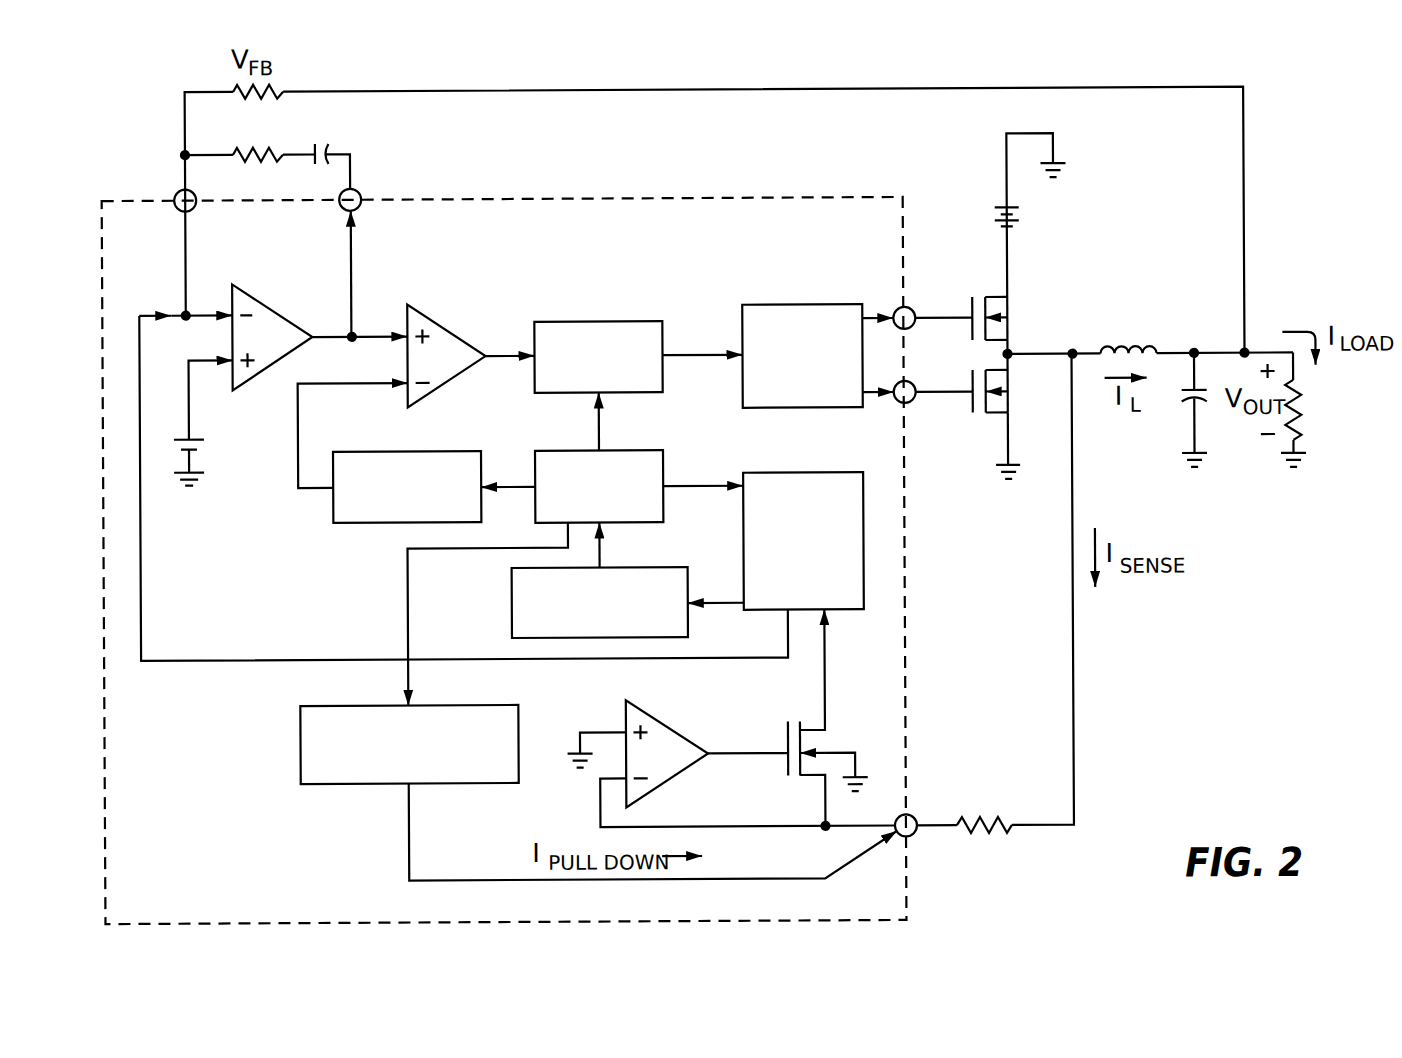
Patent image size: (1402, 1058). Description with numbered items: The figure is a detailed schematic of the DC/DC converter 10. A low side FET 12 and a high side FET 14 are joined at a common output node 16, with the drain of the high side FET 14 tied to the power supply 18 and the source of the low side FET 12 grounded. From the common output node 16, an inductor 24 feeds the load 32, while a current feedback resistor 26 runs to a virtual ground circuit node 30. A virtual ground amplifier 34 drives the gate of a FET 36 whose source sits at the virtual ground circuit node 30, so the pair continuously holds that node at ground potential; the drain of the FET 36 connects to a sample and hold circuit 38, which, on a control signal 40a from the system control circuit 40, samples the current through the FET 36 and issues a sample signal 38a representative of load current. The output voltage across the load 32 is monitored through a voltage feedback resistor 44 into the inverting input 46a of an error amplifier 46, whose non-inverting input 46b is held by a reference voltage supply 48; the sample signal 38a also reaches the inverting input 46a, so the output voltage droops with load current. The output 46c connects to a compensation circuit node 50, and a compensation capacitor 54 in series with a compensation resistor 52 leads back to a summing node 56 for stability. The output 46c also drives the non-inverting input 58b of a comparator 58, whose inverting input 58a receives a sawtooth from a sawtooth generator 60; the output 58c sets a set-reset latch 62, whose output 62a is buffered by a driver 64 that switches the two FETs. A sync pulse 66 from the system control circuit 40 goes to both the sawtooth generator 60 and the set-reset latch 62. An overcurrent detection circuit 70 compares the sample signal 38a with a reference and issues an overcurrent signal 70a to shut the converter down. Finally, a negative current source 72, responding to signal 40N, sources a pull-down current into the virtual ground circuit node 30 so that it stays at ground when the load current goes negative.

The DC/DC converter 10 is at (1296, 166).
The low side FET 12 is at (998, 415).
The high side FET 14 is at (998, 298).
The common output node 16 is at (1073, 352).
The power supply 18 is at (1000, 220).
The inductor 24 is at (1120, 342).
The current feedback resistor 26 is at (982, 836).
The virtual ground circuit node 30 is at (912, 815).
The load 32 is at (1304, 406).
The virtual ground amplifier 34 is at (664, 722).
The FET 36 is at (812, 730).
The sample and hold circuit 38 is at (790, 472).
The sample signal 38a is at (141, 518).
The system control circuit 40 is at (627, 449).
The control signal 40a is at (697, 486).
The signal 40N is at (407, 609).
The voltage feedback resistor 44 is at (285, 88).
The error amplifier 46 is at (273, 303).
The inverting input 46a is at (208, 311).
The non-inverting input 46b is at (197, 360).
The output 46c is at (360, 276).
The reference voltage supply 48 is at (206, 447).
The compensation circuit node 50 is at (361, 190).
The compensation resistor 52 is at (266, 148).
The compensation capacitor 54 is at (326, 138).
The summing node 56 is at (177, 190).
The comparator 58 is at (446, 328).
The inverting input 58a is at (367, 383).
The non-inverting input 58b is at (381, 333).
The output 58c is at (517, 354).
The sawtooth generator 60 is at (363, 522).
The set-reset latch 62 is at (600, 321).
The output 62a is at (697, 354).
The driver 64 is at (797, 305).
The sync pulse 66 is at (597, 421).
The overcurrent detection circuit 70 is at (663, 567).
The overcurrent signal 70a is at (599, 558).
The negative current source 72 is at (345, 783).